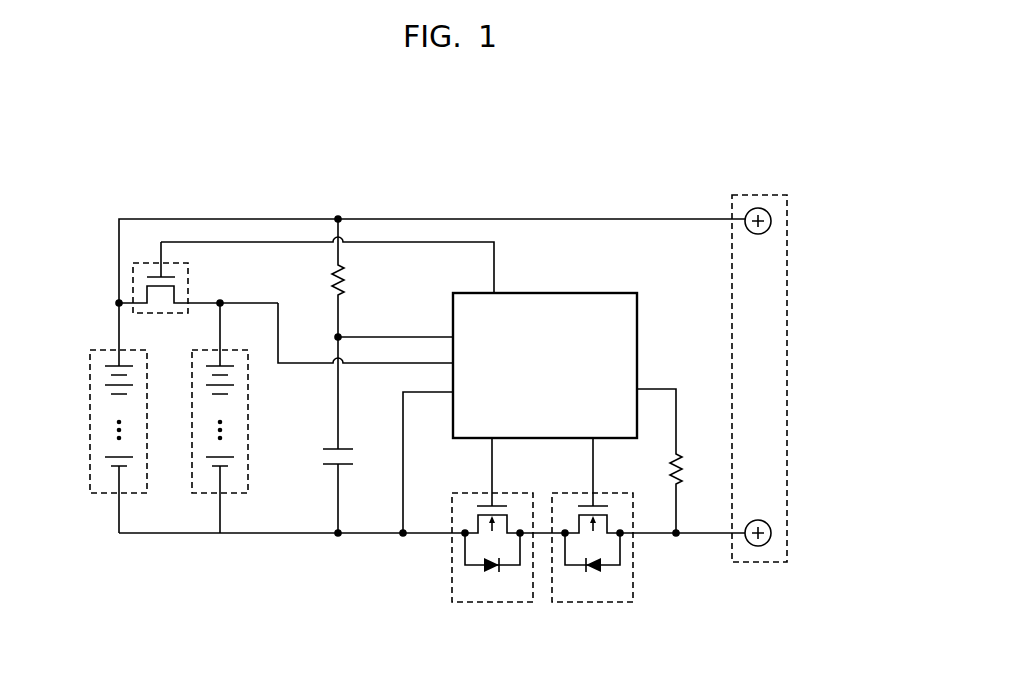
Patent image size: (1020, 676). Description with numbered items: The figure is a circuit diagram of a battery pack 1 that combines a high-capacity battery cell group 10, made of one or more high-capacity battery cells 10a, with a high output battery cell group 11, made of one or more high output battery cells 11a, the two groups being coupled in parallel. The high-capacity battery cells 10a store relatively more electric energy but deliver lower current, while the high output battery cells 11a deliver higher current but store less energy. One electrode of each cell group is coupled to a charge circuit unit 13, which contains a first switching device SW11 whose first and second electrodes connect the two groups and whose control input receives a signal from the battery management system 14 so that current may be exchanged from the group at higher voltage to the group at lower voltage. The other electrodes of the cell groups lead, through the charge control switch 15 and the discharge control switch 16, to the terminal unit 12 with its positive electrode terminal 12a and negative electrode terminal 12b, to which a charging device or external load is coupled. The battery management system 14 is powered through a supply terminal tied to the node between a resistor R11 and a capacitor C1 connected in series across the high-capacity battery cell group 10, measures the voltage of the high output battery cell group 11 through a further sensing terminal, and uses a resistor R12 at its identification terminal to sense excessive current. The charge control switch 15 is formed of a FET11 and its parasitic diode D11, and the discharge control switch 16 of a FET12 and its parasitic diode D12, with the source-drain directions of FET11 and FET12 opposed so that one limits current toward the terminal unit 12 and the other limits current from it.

The battery pack 1 is at (524, 153).
The high-capacity battery cell group 10 is at (114, 450).
The high-capacity battery cell 10a is at (111, 365).
The high output battery cell group 11 is at (215, 450).
The high output battery cell 11a is at (212, 365).
The terminal unit 12 is at (742, 384).
The positive electrode terminal 12a is at (759, 208).
The negative electrode terminal 12b is at (755, 547).
The charge circuit unit 13 is at (196, 237).
The battery management system (BMS) 14 is at (598, 293).
The charge control switch 15 is at (578, 543).
The discharge control switch 16 is at (478, 543).
The first switching device SW11 is at (144, 282).
The resistor R11 is at (358, 278).
The resistor R12 is at (680, 461).
The capacitor C1 is at (354, 435).
The FET of the charge control switch FET11 is at (587, 500).
The FET of the discharge control switch FET12 is at (487, 500).
The parasitic diode D11 is at (592, 566).
The parasitic diode D12 is at (492, 566).